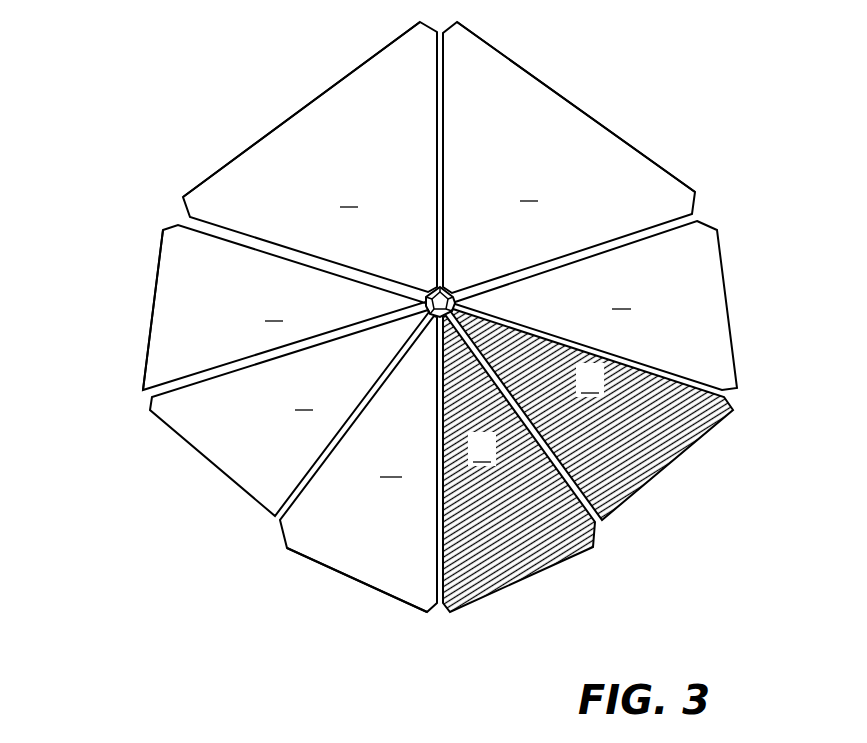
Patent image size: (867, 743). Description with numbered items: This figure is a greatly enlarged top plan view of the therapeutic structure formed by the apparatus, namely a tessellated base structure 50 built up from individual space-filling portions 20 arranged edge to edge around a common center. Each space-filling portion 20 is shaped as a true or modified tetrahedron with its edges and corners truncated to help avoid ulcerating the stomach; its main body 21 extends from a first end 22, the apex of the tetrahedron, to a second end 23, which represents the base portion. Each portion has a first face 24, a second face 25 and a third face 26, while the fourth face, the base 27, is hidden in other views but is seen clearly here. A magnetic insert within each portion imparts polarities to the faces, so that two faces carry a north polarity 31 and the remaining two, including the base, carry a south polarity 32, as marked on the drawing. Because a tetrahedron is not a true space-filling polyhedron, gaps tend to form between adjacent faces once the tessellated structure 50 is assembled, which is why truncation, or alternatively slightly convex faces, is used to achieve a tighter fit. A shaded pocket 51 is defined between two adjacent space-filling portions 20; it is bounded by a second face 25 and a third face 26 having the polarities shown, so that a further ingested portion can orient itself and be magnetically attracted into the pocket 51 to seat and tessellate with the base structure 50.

The space-filling portion 20 is at (547, 63).
The main body 21 is at (263, 300).
The first end 22 is at (462, 299).
The second end 23 is at (512, 172).
The first face 24 is at (712, 346).
The second face 25 is at (197, 245).
The third face 26 is at (185, 333).
The base 27 is at (365, 98).
The north polarity 31 is at (643, 292).
The south polarity 32 is at (287, 408).
The tessellated base structure 50 is at (270, 108).
The pocket 51 is at (642, 445).